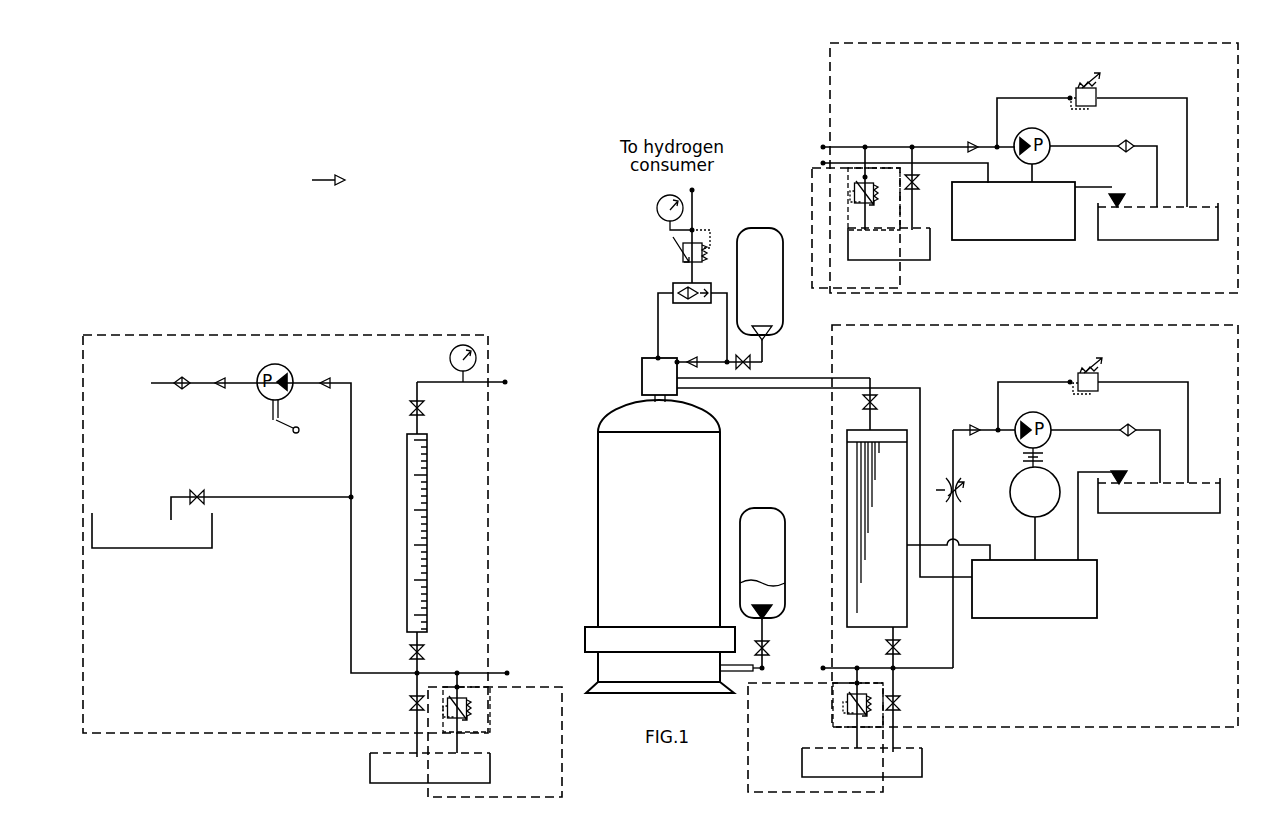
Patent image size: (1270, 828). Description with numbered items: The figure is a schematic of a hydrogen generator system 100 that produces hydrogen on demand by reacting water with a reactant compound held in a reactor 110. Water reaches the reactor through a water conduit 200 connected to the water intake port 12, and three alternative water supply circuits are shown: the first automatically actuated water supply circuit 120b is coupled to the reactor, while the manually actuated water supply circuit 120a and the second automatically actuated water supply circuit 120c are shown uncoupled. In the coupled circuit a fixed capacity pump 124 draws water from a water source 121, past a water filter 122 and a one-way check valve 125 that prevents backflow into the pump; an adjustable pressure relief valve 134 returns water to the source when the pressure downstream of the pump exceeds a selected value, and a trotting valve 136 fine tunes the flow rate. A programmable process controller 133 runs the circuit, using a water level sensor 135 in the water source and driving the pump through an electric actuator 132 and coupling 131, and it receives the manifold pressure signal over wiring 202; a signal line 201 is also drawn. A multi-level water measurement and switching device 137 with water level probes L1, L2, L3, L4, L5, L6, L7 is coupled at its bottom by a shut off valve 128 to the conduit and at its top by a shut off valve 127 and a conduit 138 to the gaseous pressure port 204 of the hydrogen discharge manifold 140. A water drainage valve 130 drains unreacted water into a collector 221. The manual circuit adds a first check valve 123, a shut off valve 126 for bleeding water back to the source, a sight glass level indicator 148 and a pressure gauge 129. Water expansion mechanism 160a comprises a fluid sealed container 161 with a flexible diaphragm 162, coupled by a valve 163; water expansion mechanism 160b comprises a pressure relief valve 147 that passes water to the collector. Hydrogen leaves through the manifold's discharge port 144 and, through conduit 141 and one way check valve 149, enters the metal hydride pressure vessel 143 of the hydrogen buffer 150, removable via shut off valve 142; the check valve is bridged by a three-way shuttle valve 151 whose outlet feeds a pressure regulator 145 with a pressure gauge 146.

The hydrogen generator system 100 is at (303, 184).
The reactor 110 is at (660, 546).
The water intake port 12 is at (754, 669).
The manually actuated water supply circuit 120a is at (285, 534).
The first automatically actuated water supply circuit 120b is at (1035, 526).
The second automatically actuated water supply circuit 120c is at (1034, 168).
The water source 121 is at (656, 375).
The water filter 122 is at (654, 274).
The first check valve 123 is at (221, 372).
The pump 124 is at (654, 276).
The one-way check valve 125 is at (653, 276).
The shut off valve 126 is at (261, 495).
The shut off valve 127 is at (642, 406).
The shut off valve 128 is at (654, 651).
The pressure gauge 129 is at (446, 363).
The water drainage valve 130 is at (662, 451).
The coupling 131 is at (1052, 458).
The electric actuator 132 is at (1035, 513).
The programmable process controller 133 is at (1024, 400).
The adjustable pressure relief valve 134 is at (1070, 267).
The water level sensor 135 is at (1107, 362).
The trotting valve 136 is at (965, 549).
The multi-level water measurement and switching device 137 is at (877, 526).
The conduit 138 is at (773, 367).
The hydrogen discharge manifold 140 is at (666, 380).
The conduit 141 is at (745, 353).
The shut off valve 142 is at (774, 344).
The metal hydride pressure vessel 143 is at (760, 281).
The discharge port 144 is at (647, 327).
The pressure regulator 145 is at (665, 247).
The pressure gauge 146 is at (657, 236).
The pressure relief valve 147 is at (671, 449).
The sight glass level indicator 148 is at (439, 533).
The one way check valve 149 is at (702, 330).
The hydrogen buffer 150 is at (760, 270).
The three-way shuttle valve 151 is at (692, 304).
The water expansion mechanism 160a is at (770, 550).
The water expansion mechanism 160b is at (664, 482).
The fluid sealed container 161 is at (762, 563).
The flexible diaphragm 162 is at (763, 602).
The valve 163 is at (779, 643).
The water conduit 200 is at (583, 400).
The signal line 201 is at (952, 541).
The wiring 202 is at (832, 363).
The gaseous pressure port 204 is at (492, 382).
The collector 221 is at (650, 505).
The water level probe L1 is at (868, 531).
The water level probe L2 is at (873, 517).
The water level probe L3 is at (877, 505).
The water level probe L4 is at (881, 491).
The water level probe L5 is at (884, 478).
The water level probe L6 is at (887, 465).
The water level probe L7 is at (891, 452).